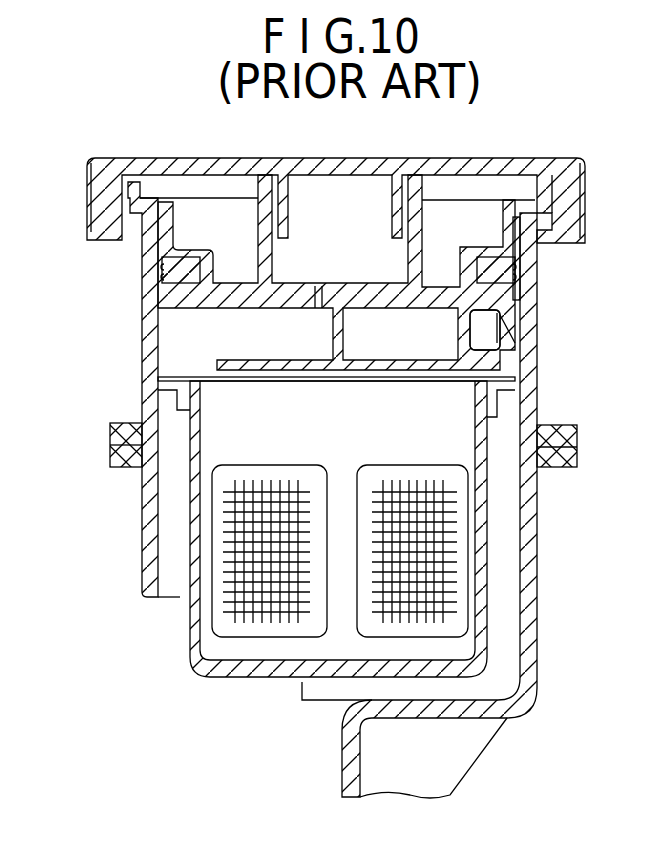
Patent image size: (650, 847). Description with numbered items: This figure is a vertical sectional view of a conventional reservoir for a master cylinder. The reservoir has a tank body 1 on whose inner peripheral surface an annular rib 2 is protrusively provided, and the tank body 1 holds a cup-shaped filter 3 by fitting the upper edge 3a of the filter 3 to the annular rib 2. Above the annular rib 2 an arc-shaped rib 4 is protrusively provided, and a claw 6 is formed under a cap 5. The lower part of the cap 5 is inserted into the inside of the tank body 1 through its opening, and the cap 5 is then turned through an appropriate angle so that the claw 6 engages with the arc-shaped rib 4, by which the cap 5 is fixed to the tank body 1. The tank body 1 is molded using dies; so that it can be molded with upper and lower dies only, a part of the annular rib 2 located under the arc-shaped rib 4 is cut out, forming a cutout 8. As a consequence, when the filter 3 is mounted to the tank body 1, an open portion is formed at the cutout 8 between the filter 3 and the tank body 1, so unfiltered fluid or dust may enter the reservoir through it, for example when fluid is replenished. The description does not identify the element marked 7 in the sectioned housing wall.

The tank body 1 is at (122, 379).
The annular rib 2 is at (183, 398).
The cup-shaped filter 3 is at (195, 508).
The upper edge of the filter 3a is at (195, 378).
The arc-shaped rib 4 is at (507, 330).
The cap 5 is at (470, 157).
The claw 6 is at (502, 360).
The housing 7 is at (503, 512).
The cutout 8 is at (503, 410).